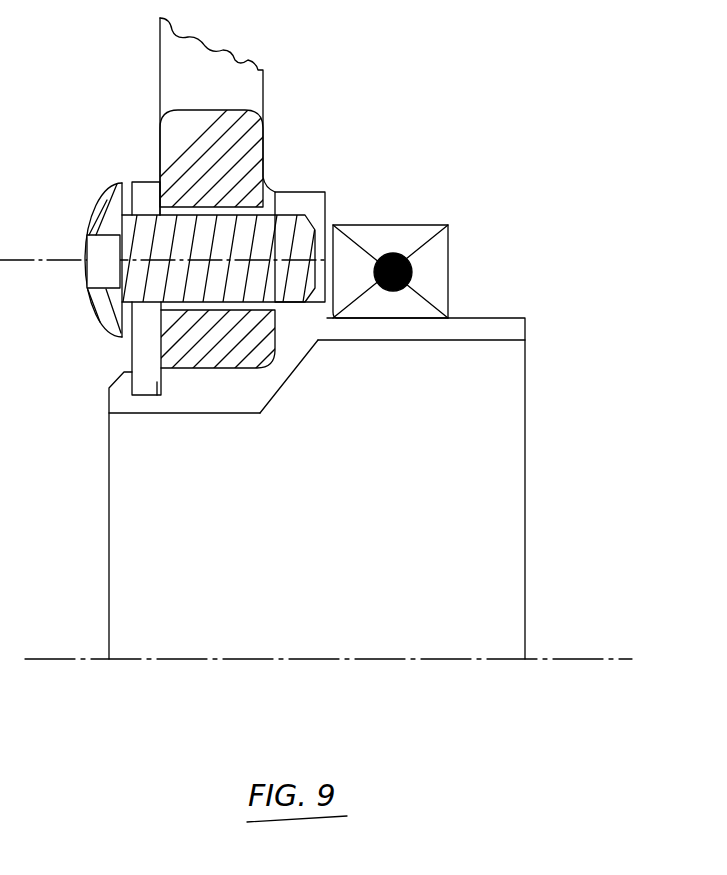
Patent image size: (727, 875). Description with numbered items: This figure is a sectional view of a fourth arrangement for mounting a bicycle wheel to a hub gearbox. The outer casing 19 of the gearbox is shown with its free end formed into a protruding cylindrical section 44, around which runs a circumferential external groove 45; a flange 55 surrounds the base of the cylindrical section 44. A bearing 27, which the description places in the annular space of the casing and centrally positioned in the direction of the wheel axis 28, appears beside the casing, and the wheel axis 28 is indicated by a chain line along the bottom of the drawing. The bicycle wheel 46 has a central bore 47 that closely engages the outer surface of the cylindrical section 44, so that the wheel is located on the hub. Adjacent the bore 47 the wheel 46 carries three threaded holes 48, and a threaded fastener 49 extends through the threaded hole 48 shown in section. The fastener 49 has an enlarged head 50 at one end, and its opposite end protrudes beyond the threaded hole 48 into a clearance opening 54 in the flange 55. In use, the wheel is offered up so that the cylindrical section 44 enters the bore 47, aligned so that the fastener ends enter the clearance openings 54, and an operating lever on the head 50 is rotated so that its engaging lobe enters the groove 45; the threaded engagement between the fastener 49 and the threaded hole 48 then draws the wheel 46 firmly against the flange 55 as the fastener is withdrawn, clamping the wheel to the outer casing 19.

The outer casing 19 is at (522, 362).
The bearing 27 is at (423, 230).
The wheel axis 28 is at (612, 656).
The protruding cylindrical section 44 is at (190, 400).
The circumferential external groove 45 is at (161, 396).
The bicycle wheel 46 is at (173, 77).
The central bore 47 is at (240, 372).
The threaded holes 48 is at (217, 202).
The threaded fasteners 49 is at (280, 228).
The enlarged head 50 is at (110, 318).
The clearance openings 54 is at (320, 314).
The flange 55 is at (316, 200).